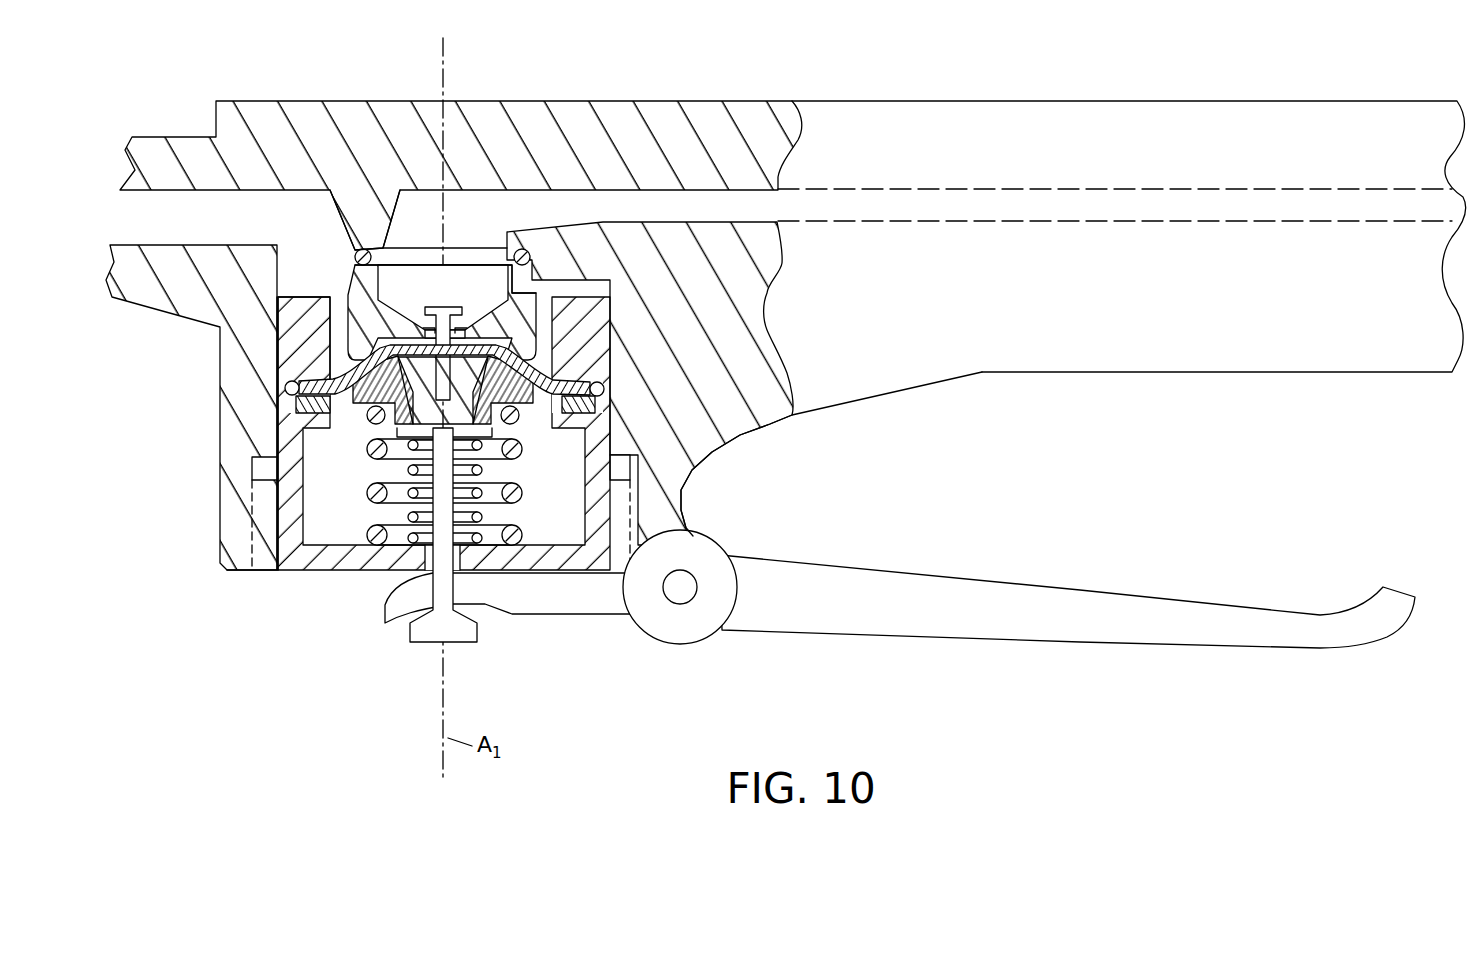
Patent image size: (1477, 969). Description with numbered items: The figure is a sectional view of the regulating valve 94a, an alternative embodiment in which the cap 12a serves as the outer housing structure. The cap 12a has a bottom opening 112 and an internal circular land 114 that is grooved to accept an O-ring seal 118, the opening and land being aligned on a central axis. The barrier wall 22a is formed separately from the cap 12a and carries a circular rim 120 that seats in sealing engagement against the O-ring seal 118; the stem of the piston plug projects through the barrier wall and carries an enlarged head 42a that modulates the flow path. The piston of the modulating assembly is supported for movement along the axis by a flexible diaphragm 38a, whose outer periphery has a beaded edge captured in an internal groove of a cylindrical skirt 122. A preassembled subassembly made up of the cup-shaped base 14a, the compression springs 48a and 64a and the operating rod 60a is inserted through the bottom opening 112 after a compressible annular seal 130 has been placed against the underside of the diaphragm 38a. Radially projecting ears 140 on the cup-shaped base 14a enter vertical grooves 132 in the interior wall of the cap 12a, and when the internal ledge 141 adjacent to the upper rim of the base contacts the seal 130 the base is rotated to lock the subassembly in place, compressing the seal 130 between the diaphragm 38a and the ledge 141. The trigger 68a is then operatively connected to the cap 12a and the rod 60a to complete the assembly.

The regulating valve 94a is at (806, 54).
The cap 12a is at (486, 108).
The internal circular land 114 is at (348, 238).
The O-ring seal 118 is at (373, 260).
The circular rim 120 is at (530, 270).
The cylindrical skirt 122 is at (302, 308).
The barrier wall 22a is at (370, 317).
The enlarged head 42a is at (448, 305).
The flexible diaphragm 38a is at (543, 372).
The compressible annular seal 130 is at (592, 398).
The radially projecting ears 140 is at (250, 470).
The vertical grooves 132 is at (250, 532).
The internal ledge 141 is at (318, 422).
The compression spring 64a is at (408, 470).
The compression spring 48a is at (522, 490).
The bottom opening 112 is at (280, 573).
The cup-shaped base 14a is at (337, 572).
The operating rod 60a is at (455, 594).
The trigger 68a is at (997, 636).